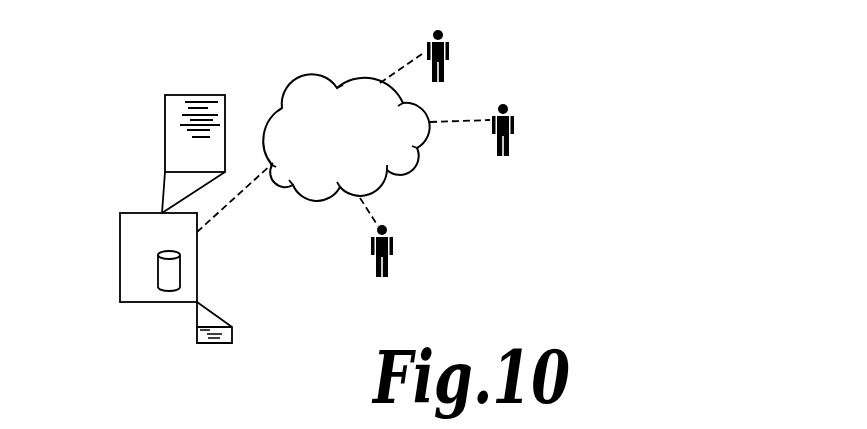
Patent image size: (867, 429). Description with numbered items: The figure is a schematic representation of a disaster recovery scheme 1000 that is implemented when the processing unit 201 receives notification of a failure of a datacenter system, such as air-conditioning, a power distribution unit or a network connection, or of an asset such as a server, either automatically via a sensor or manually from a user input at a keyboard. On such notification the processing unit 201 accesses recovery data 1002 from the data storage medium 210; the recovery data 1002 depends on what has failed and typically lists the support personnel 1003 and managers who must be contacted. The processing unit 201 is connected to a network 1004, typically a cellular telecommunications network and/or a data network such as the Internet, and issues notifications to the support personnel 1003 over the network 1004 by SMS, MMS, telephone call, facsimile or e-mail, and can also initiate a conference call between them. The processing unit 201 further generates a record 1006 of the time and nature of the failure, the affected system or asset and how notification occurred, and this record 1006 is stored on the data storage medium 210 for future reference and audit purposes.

The disaster recovery scheme 1000 is at (226, 84).
The recovery data 1002 is at (173, 130).
The processing unit 201 is at (142, 282).
The data storage medium 210 is at (165, 270).
The record 1006 is at (232, 338).
The network 1004 is at (318, 172).
The support personnel 1003 is at (450, 58).